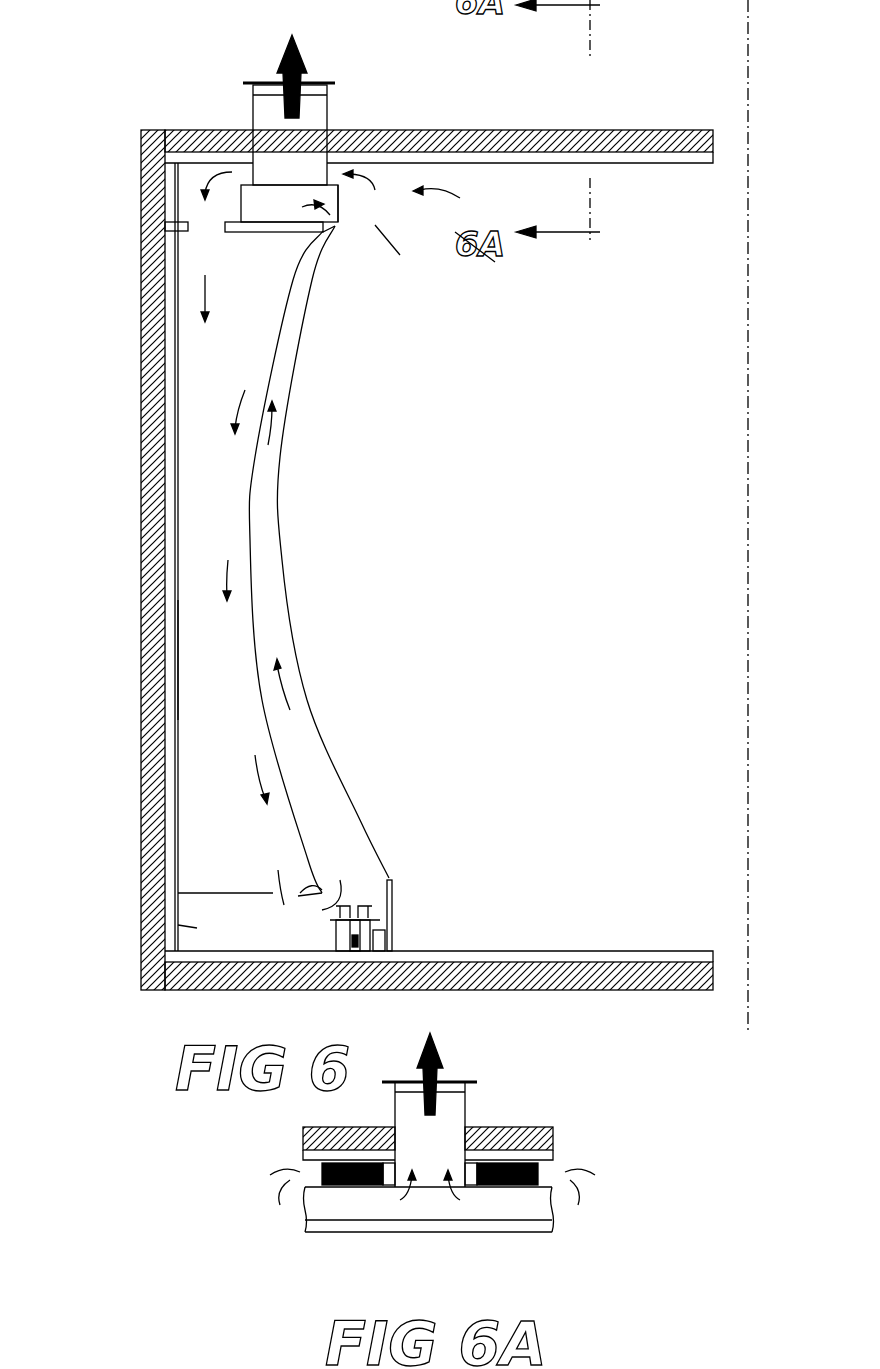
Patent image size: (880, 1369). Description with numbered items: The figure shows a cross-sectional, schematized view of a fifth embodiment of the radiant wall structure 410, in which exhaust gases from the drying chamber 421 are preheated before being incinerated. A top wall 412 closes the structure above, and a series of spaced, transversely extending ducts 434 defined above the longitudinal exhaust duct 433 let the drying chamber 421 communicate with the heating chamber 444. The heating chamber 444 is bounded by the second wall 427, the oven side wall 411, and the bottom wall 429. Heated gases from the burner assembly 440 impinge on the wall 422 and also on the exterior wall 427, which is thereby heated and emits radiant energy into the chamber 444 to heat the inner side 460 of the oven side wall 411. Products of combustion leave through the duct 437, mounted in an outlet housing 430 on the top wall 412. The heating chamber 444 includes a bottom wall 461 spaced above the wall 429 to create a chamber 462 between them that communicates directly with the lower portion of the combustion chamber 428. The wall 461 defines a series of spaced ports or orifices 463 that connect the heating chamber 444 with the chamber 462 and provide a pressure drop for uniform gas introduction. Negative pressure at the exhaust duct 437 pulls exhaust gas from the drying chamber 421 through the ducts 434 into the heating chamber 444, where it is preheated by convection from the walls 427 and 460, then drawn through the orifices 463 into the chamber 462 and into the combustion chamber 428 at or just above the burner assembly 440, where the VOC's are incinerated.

In FIG. 6, the enclosure housing 410 is at (381, 563).
In FIG. 6, the oven side wall 411 is at (134, 199).
In FIG. 6, the top wall 412 is at (478, 130).
In FIG. 6A, the top wall 412 is at (510, 1130).
In FIG. 6, the drying chamber 421 is at (592, 475).
In FIG. 6, the wall 422 is at (284, 590).
In FIG. 6, the second wall 427 is at (268, 722).
In FIG. 6, the combustion chamber 428 is at (327, 797).
In FIG. 6, the bottom wall 429 is at (238, 953).
In FIG. 6, the outlet housing 430 is at (312, 246).
In FIG. 6, the longitudinal exhaust duct 433 is at (340, 214).
In FIG. 6A, the longitudinal exhaust duct 433 is at (355, 1205).
In FIG. 6, the transverse ducts 434 is at (337, 190).
In FIG. 6A, the transverse ducts 434 is at (322, 1173).
In FIG. 6, the exhaust duct 437 is at (306, 130).
In FIG. 6A, the exhaust duct 437 is at (455, 1113).
In FIG. 6, the burner assembly 440 is at (385, 935).
In FIG. 6, the heating chamber 444 is at (192, 538).
In FIG. 6, the inner side of oven side wall 460 is at (175, 657).
In FIG. 6, the bottom wall of heating chamber 461 is at (190, 893).
In FIG. 6, the chamber 462 is at (197, 928).
In FIG. 6, the ports or orifices 463 is at (272, 893).